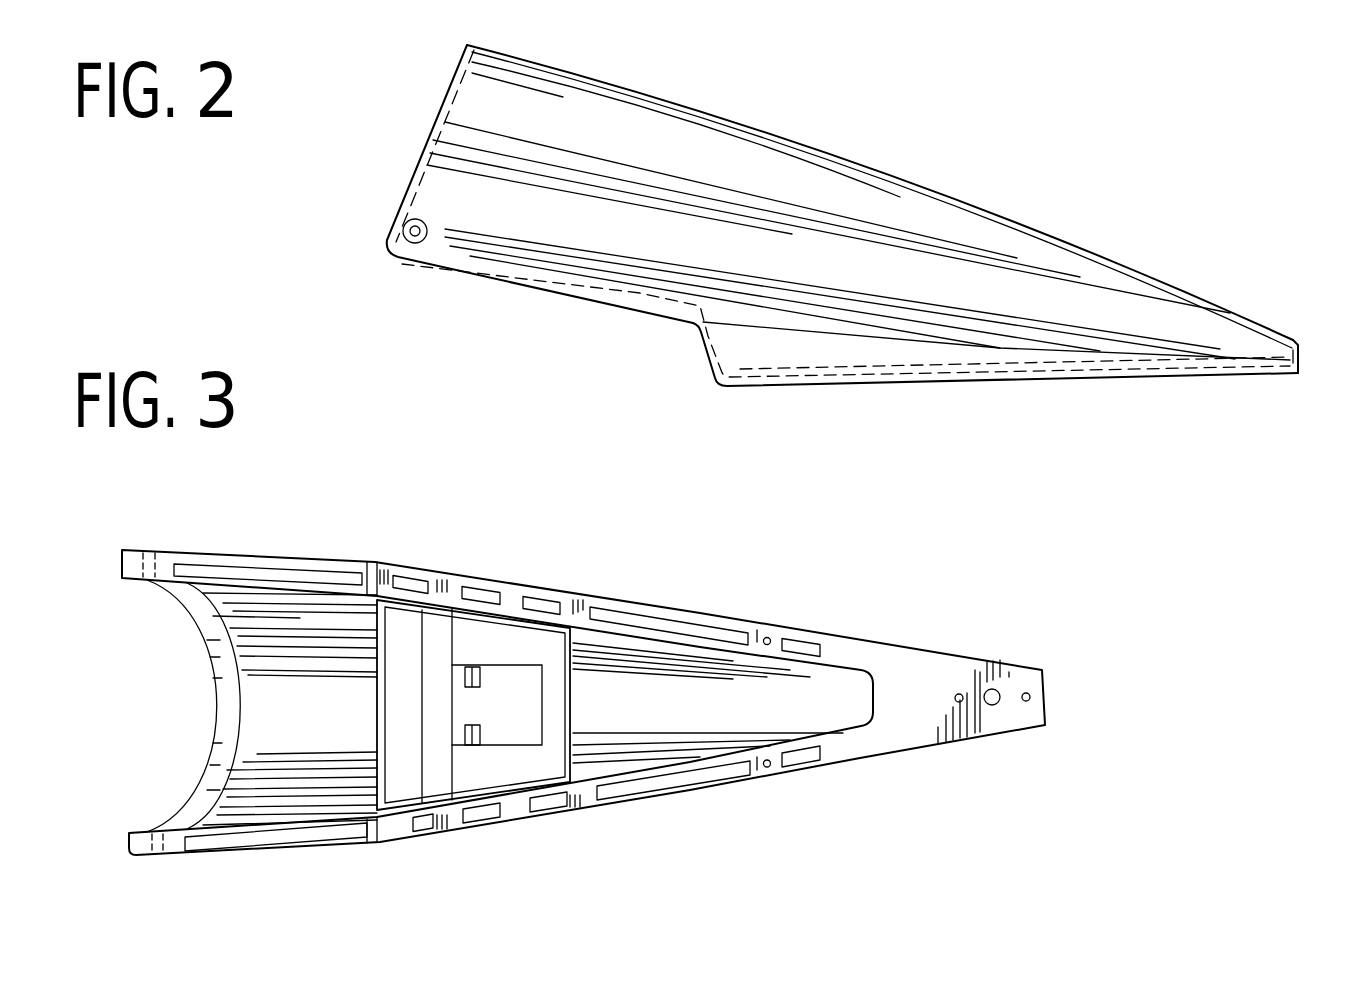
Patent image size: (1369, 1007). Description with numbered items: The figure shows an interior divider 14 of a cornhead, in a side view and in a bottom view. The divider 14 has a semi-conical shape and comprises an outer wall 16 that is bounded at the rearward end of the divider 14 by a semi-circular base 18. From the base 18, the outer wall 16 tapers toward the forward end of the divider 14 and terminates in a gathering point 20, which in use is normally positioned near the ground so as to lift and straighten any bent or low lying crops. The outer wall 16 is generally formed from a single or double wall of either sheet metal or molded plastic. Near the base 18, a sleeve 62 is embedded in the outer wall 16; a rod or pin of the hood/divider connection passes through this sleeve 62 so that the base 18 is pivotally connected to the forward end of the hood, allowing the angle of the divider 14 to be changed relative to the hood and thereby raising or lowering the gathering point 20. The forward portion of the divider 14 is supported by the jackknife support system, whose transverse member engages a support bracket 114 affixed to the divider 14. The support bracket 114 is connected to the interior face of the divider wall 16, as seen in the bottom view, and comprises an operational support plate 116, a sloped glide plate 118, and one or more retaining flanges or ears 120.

In FIG. 2, the divider 14 is at (904, 181).
In FIG. 3, the divider 14 is at (622, 598).
In FIG. 2, the outer wall 16 is at (883, 348).
In FIG. 3, the outer wall 16 is at (400, 566).
In FIG. 2, the semi-circular base 18 is at (427, 137).
In FIG. 3, the semi-circular base 18 is at (208, 664).
In FIG. 2, the gathering point 20 is at (1295, 340).
In FIG. 3, the gathering point 20 is at (1045, 675).
In FIG. 2, the sleeve 62 is at (410, 234).
In FIG. 3, the sleeve 62 is at (168, 870).
In FIG. 3, the support bracket 114 is at (410, 807).
In FIG. 3, the operational support plate 116 is at (557, 765).
In FIG. 3, the sloped glide plate 118 is at (522, 733).
In FIG. 3, the retaining flanges or ears 120 is at (482, 680).